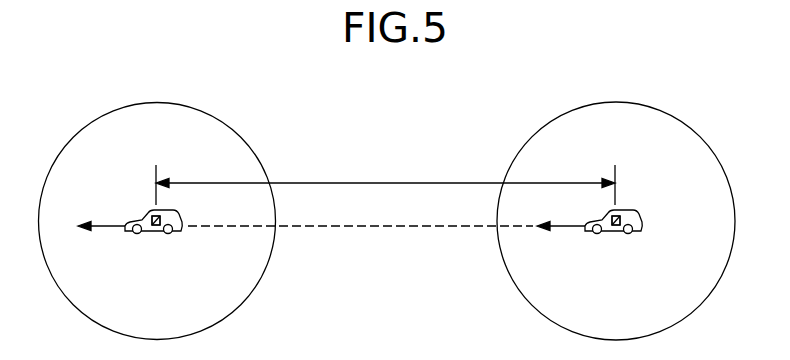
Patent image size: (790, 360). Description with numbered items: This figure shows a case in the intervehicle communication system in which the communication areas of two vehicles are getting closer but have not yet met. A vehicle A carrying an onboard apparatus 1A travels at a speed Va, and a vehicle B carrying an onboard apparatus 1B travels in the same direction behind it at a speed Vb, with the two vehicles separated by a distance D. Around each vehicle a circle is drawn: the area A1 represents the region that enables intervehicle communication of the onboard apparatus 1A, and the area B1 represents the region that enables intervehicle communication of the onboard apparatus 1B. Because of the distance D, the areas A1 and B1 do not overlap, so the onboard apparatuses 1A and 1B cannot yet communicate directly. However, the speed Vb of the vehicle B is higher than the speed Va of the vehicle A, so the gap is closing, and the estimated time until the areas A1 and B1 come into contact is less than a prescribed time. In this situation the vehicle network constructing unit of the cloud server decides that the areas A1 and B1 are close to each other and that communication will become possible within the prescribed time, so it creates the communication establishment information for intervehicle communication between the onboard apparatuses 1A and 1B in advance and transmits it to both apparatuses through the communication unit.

The area that enables intervehicle communication of onboard apparatus 1A A1 is at (227, 122).
The area that enables intervehicle communication of onboard apparatus 1B B1 is at (687, 122).
The vehicle A is at (137, 234).
The vehicle B is at (595, 234).
The onboard apparatus of vehicle A 1A is at (155, 227).
The onboard apparatus of vehicle B 1B is at (613, 227).
The distance D is at (385, 189).
The speed of vehicle A Va is at (101, 211).
The speed of vehicle B Vb is at (561, 211).